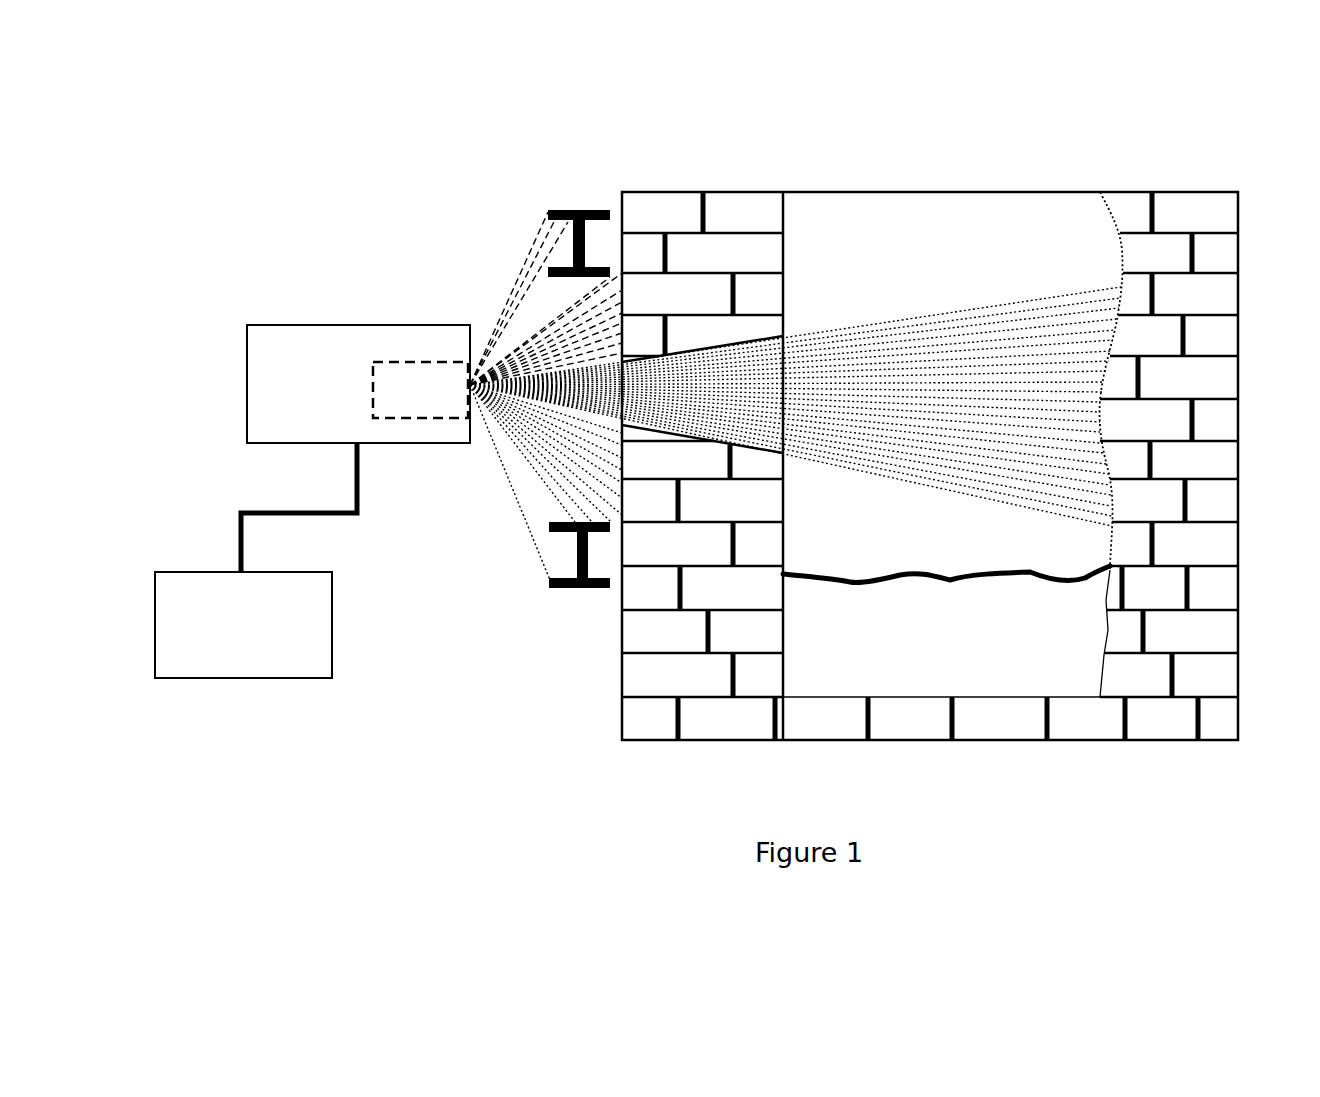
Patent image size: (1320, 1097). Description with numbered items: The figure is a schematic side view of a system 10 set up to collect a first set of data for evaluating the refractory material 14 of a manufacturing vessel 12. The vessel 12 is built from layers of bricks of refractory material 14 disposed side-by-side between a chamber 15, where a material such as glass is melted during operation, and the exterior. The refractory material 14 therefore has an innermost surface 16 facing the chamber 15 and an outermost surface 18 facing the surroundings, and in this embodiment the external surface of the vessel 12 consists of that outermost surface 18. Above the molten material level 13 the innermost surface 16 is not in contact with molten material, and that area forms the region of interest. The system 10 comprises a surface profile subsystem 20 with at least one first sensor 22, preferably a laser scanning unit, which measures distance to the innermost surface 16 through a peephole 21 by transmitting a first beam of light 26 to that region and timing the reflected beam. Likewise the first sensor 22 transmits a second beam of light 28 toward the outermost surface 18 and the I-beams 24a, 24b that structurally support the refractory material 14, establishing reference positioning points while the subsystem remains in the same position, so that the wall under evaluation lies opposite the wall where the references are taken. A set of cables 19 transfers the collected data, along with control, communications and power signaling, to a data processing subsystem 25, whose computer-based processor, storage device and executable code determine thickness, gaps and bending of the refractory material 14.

The system 10 is at (423, 138).
The manufacturing vessel 12 is at (897, 171).
The molten material level 13 is at (878, 585).
The refractory material 14 is at (753, 205).
The chamber 15 is at (945, 528).
The innermost surface 16 is at (1118, 247).
The outermost surface 18 is at (1240, 287).
The set of cables 19 is at (229, 537).
The surface profile subsystem 20 is at (298, 324).
The peephole 21 is at (618, 423).
The first sensor 22 is at (428, 352).
The I-beam 24a is at (585, 208).
The I-beam 24b is at (583, 590).
The data processing subsystem 25 is at (332, 620).
The first beam of light 26 is at (895, 318).
The second beam of light 28 is at (512, 278).